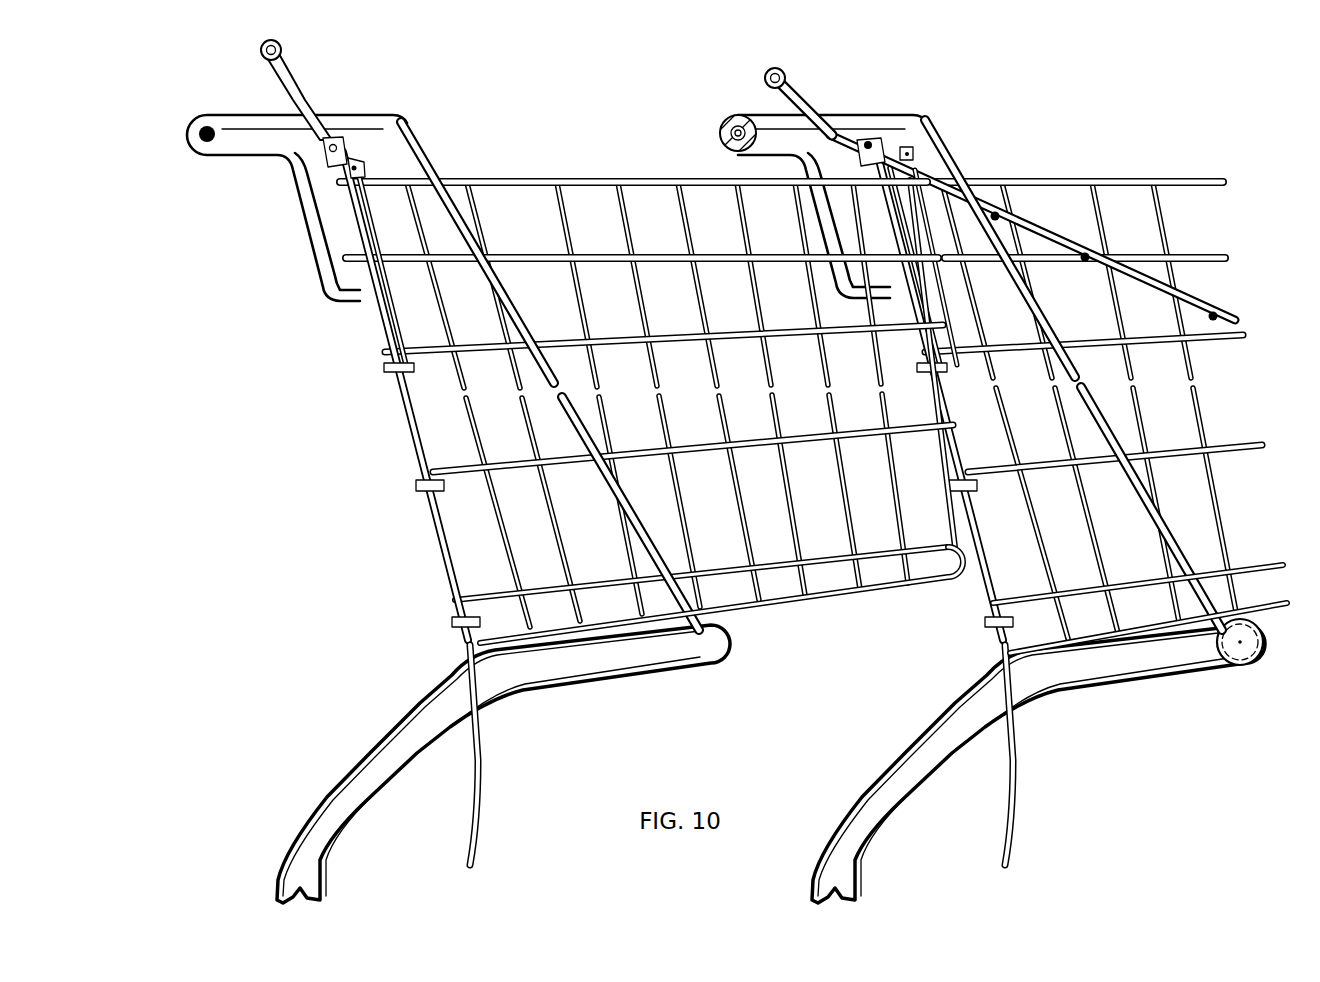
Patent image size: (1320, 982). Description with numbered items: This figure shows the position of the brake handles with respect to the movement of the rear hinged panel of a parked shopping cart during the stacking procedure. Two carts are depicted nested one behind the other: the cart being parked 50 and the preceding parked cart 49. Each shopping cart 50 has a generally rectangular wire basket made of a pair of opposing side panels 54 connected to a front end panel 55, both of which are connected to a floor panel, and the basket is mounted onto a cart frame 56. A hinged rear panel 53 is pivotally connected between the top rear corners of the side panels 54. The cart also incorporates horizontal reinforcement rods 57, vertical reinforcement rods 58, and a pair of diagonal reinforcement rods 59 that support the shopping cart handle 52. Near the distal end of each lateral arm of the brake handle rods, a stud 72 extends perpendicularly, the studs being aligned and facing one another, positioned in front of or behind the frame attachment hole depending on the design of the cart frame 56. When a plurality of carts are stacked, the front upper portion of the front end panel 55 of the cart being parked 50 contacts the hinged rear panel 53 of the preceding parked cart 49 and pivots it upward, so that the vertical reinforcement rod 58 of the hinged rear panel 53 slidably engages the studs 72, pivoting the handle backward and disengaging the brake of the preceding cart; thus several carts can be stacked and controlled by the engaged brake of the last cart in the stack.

The preceding parked cart 49 is at (1157, 693).
The shopping cart 50 is at (532, 491).
The shopping cart handle 52 is at (197, 130).
The hinged rear panel 53 is at (1040, 223).
The side panels 54 is at (757, 549).
The front end panel 55 is at (933, 207).
The cart frame 56 is at (397, 750).
The horizontal reinforcement rods 57 is at (573, 185).
The vertical reinforcement rods 58 is at (383, 330).
The diagonal reinforcement rods 59 is at (430, 172).
The stud 72 is at (352, 160).